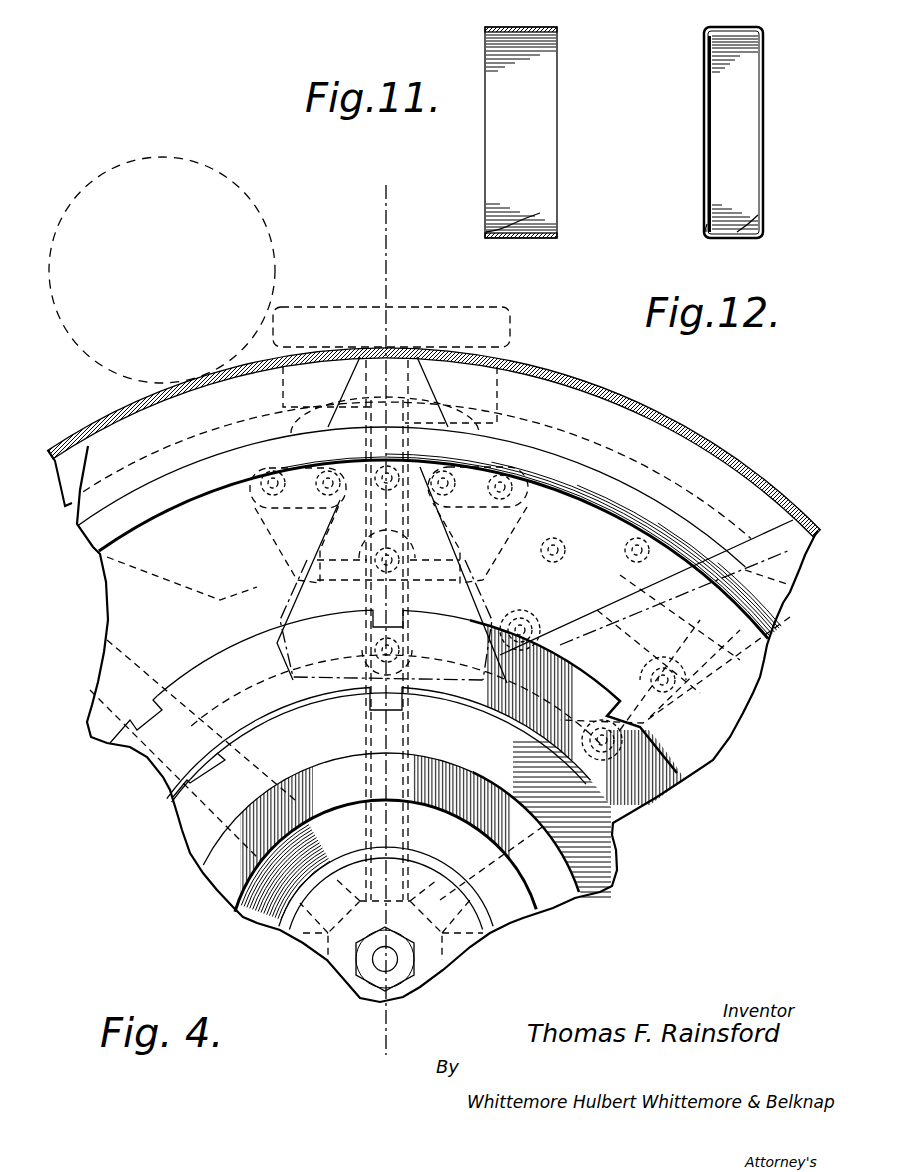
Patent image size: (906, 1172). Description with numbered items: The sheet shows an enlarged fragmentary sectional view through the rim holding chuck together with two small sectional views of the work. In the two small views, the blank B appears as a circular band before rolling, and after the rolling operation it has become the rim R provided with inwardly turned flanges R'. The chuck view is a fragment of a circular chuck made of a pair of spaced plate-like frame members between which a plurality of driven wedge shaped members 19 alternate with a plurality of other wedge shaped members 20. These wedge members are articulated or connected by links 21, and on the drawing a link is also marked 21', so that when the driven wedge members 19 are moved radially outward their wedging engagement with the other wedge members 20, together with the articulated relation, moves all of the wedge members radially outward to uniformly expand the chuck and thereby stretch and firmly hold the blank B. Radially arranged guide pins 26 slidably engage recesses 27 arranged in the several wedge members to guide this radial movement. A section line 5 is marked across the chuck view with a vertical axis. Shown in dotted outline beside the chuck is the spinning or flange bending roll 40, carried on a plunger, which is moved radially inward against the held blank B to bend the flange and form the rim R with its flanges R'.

In FIG. 11, the blank B is at (543, 147).
In FIG. 12, the blank B is at (727, 107).
In FIG. 11, the rim R is at (541, 210).
In FIG. 12, the rim R is at (766, 208).
In FIG. 12, the inwardly turned flanges R' is at (679, 210).
In FIG. 4, the section line 5 is at (345, 208).
In FIG. 4, the driven wedge shaped members 19 is at (777, 533).
In FIG. 4, the wedge shaped members 20 is at (663, 443).
In FIG. 4, the links 21 is at (487, 525).
In FIG. 4, the bolt pad 21' is at (275, 525).
In FIG. 4, the guide pins 26 is at (400, 728).
In FIG. 4, the recesses 27 is at (252, 250).
In FIG. 4, the spinning or flange bending roll 40 is at (512, 320).